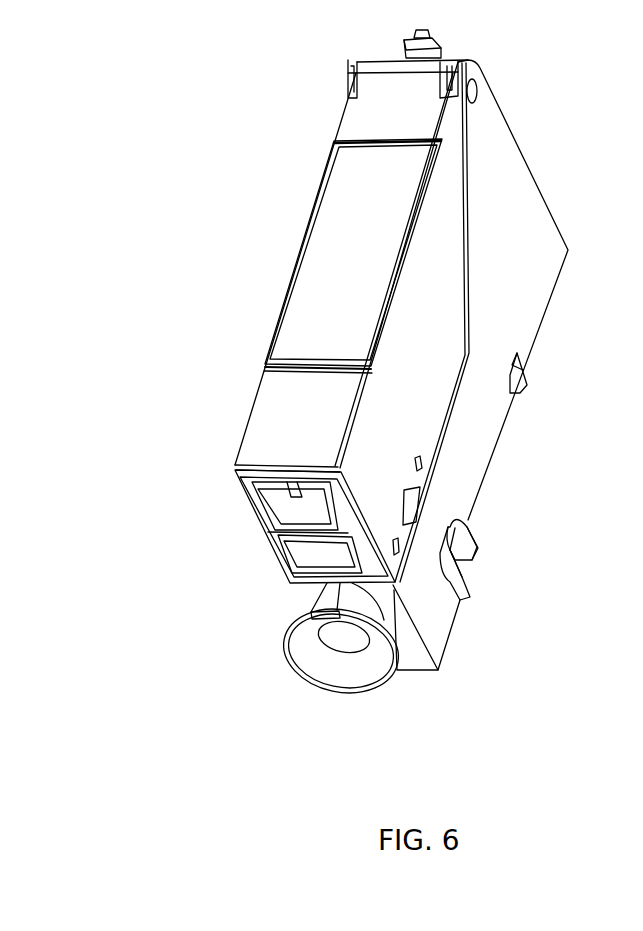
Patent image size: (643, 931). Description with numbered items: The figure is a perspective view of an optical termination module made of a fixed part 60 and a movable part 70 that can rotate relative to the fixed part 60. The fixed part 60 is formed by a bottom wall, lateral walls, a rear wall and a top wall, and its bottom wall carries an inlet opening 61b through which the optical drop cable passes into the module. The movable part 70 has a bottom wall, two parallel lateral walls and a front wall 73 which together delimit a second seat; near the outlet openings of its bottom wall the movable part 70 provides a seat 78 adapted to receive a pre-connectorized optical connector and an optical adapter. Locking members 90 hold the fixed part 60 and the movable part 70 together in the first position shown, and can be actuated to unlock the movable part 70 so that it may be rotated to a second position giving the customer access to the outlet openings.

The fixed part 60 is at (523, 267).
The movable part 70 is at (428, 384).
The front wall 73 is at (279, 400).
The seat 78 is at (318, 570).
The locking members 90 is at (393, 585).
The inlet opening 61b is at (338, 652).